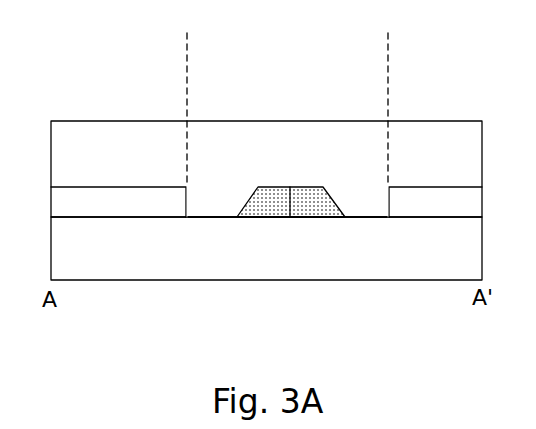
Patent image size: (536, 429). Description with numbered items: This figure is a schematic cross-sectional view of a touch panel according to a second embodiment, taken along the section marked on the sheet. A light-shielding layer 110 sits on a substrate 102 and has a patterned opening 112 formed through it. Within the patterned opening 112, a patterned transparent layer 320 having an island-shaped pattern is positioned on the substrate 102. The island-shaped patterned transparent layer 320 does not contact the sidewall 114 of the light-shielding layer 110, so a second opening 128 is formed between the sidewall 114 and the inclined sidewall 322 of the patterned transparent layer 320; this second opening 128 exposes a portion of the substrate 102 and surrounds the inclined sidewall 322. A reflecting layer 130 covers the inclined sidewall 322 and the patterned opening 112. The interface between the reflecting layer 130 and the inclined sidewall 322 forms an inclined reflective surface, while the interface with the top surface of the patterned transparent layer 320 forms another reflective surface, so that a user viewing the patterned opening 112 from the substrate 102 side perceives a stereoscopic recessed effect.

The substrate 102 is at (93, 250).
The light-shielding layer 110 is at (157, 203).
The patterned opening 112 is at (388, 37).
The sidewall 114 is at (187, 190).
The second opening 128 is at (217, 196).
The reflecting layer 130 is at (78, 143).
The patterned transparent layer 320 is at (283, 208).
The inclined sidewall 322 is at (331, 200).